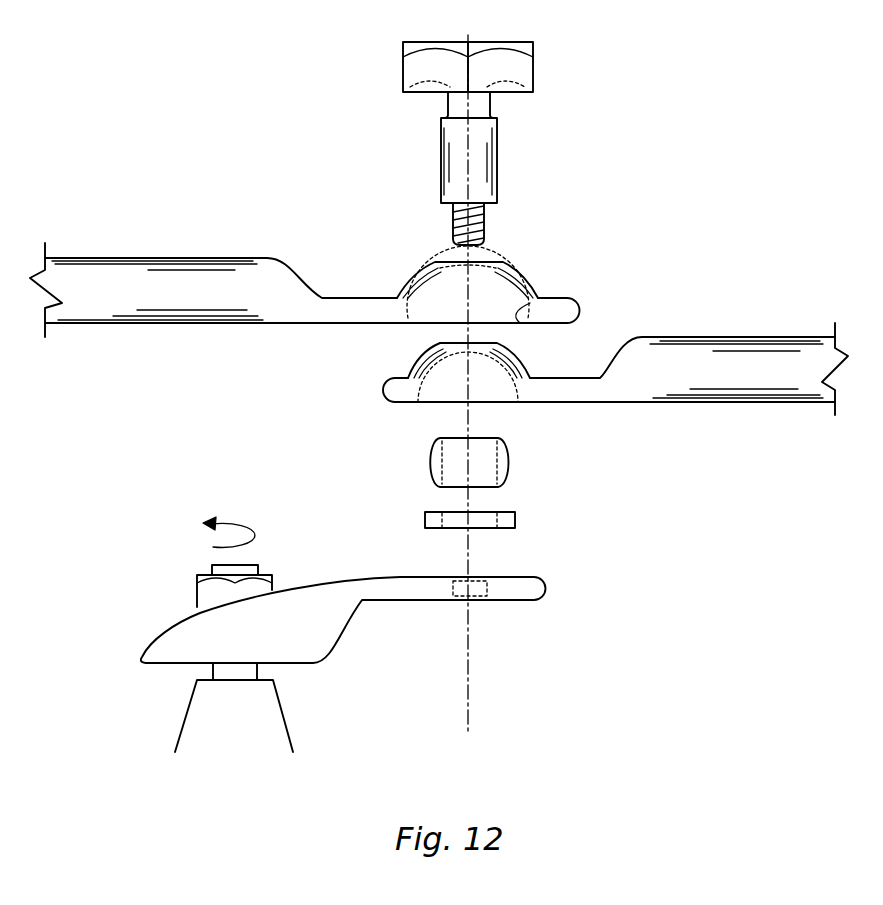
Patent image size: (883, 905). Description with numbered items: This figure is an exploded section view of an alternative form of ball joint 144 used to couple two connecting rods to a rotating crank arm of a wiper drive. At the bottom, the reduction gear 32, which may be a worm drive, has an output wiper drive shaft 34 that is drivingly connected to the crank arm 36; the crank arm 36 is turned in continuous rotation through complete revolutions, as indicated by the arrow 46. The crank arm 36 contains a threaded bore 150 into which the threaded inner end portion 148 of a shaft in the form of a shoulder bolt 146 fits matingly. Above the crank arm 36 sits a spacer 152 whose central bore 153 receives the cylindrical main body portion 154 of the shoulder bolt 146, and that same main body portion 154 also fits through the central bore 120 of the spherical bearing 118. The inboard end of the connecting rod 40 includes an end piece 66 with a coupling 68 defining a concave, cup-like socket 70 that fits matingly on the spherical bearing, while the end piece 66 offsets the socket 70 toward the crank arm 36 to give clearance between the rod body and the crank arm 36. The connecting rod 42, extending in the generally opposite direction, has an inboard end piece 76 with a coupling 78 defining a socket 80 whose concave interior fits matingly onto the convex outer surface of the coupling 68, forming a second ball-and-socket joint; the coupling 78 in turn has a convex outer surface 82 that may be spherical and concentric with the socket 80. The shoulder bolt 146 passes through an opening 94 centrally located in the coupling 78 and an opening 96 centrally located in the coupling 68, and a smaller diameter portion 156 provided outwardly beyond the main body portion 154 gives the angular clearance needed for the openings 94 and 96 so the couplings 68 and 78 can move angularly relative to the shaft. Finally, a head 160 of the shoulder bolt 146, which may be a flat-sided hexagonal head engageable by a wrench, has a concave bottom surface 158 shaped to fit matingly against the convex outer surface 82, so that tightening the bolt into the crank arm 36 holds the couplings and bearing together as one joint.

The reduction gear 32 is at (275, 727).
The wiper drive shaft 34 is at (217, 668).
The crank arm 36 is at (362, 600).
The connecting rod 40 is at (742, 337).
The connecting rod 42 is at (183, 258).
The arrow 46 is at (240, 522).
The end piece 66 is at (586, 378).
The coupling 68 is at (395, 402).
The socket 70 is at (430, 402).
The inboard end piece 76 is at (353, 298).
The coupling 78 is at (535, 276).
The socket 80 is at (520, 323).
The convex outer surface 82 is at (430, 265).
The opening 94 is at (484, 262).
The opening 96 is at (453, 338).
The spherical bearing 118 is at (513, 468).
The central bore 120 is at (512, 450).
The ball joint 144 is at (600, 240).
The shoulder bolt 146 is at (503, 155).
The threaded inner end portion 148 is at (487, 220).
The threaded bore 150 is at (483, 600).
The spacer 152 is at (515, 521).
The central bore 153 is at (515, 517).
The cylindrical main body portion 154 is at (497, 186).
The smaller diameter portion 156 is at (491, 108).
The concave bottom surface 158 is at (538, 88).
The head 160 is at (537, 58).